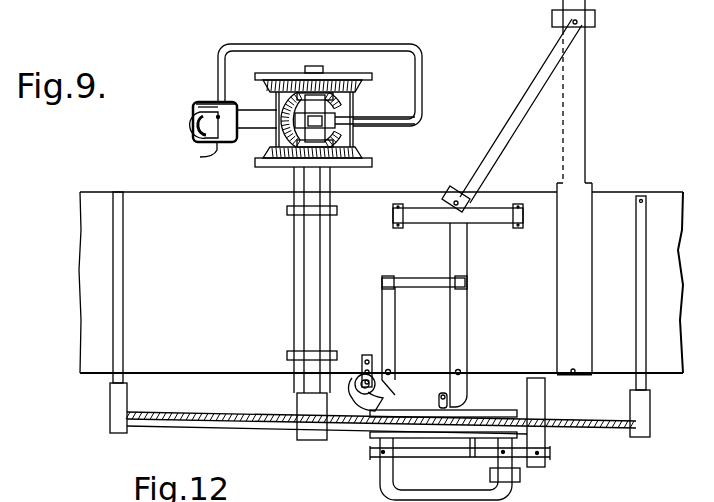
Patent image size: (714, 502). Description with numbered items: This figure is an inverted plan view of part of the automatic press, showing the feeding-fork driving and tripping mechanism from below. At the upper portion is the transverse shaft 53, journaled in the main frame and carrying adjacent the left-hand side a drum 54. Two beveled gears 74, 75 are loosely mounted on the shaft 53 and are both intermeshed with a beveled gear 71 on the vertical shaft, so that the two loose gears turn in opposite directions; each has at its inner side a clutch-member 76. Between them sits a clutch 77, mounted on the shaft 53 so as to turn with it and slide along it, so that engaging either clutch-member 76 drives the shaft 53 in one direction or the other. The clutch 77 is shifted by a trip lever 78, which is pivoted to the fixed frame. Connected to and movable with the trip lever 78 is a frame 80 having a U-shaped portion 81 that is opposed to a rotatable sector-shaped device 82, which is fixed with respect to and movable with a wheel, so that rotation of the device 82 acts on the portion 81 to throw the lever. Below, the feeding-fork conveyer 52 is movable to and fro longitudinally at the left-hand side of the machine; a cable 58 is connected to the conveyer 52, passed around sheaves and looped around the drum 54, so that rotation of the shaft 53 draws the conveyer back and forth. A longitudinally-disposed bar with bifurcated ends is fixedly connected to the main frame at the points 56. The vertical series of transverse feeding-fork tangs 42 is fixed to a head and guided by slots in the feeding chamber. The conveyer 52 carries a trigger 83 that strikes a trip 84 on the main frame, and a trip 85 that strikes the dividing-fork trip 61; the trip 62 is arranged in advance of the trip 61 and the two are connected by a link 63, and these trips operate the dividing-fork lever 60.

The feeding-fork tangs 42 is at (545, 400).
The feeding-fork conveyer 52 is at (460, 466).
The transverse shaft 53 is at (310, 282).
The drum 54 is at (318, 440).
The fixed connection points 56 is at (114, 344).
The cable 58 is at (610, 429).
The dividing-fork lever 60 is at (506, 133).
The dividing-fork trip 61 is at (460, 321).
The dividing-fork trip 62 is at (396, 321).
The link 63 is at (422, 278).
The beveled gear 71 is at (340, 138).
The beveled gear 74 is at (276, 147).
The beveled gear 75 is at (355, 86).
The clutch-members 76 is at (277, 97).
The clutch 77 is at (336, 108).
The trip lever 78 is at (423, 70).
The frame 80 is at (200, 157).
The U-shaped portion 81 is at (207, 102).
The sector-shaped device 82 is at (205, 120).
The trigger 83 is at (374, 403).
The trip 84 is at (374, 384).
The trip 85 is at (482, 373).